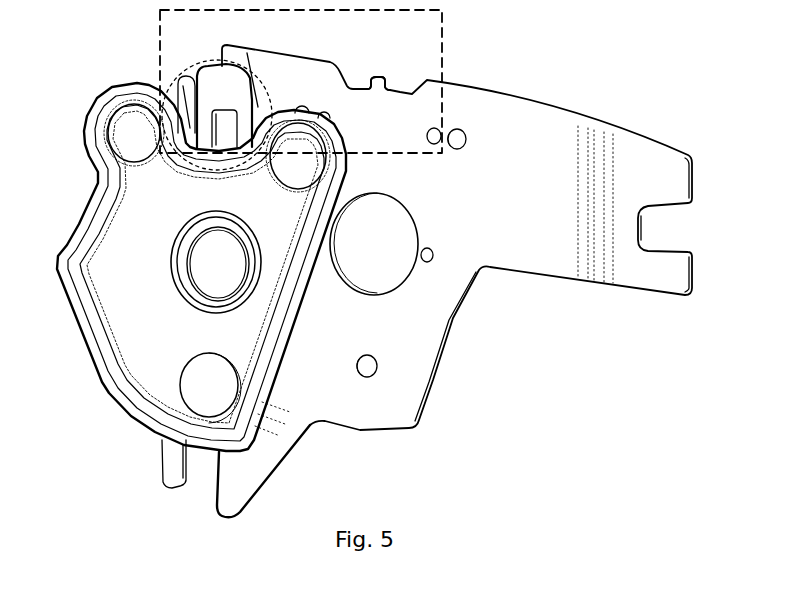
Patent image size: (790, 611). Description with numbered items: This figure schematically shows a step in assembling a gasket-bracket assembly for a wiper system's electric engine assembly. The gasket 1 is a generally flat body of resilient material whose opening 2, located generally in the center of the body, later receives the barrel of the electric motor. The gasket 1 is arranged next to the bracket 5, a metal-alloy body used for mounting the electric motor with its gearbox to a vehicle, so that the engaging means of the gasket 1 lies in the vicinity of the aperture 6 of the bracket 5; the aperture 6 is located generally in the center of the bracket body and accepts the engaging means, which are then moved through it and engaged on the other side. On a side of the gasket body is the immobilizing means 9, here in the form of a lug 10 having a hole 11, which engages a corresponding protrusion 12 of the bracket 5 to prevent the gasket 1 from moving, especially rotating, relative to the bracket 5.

The gasket 1 is at (107, 397).
The opening 2 is at (212, 258).
The bracket 5 is at (528, 127).
The aperture 6 is at (388, 265).
The immobilizing means 9 is at (267, 93).
The lug 10 is at (212, 72).
The hole 11 is at (222, 128).
The protrusion 12 is at (383, 77).